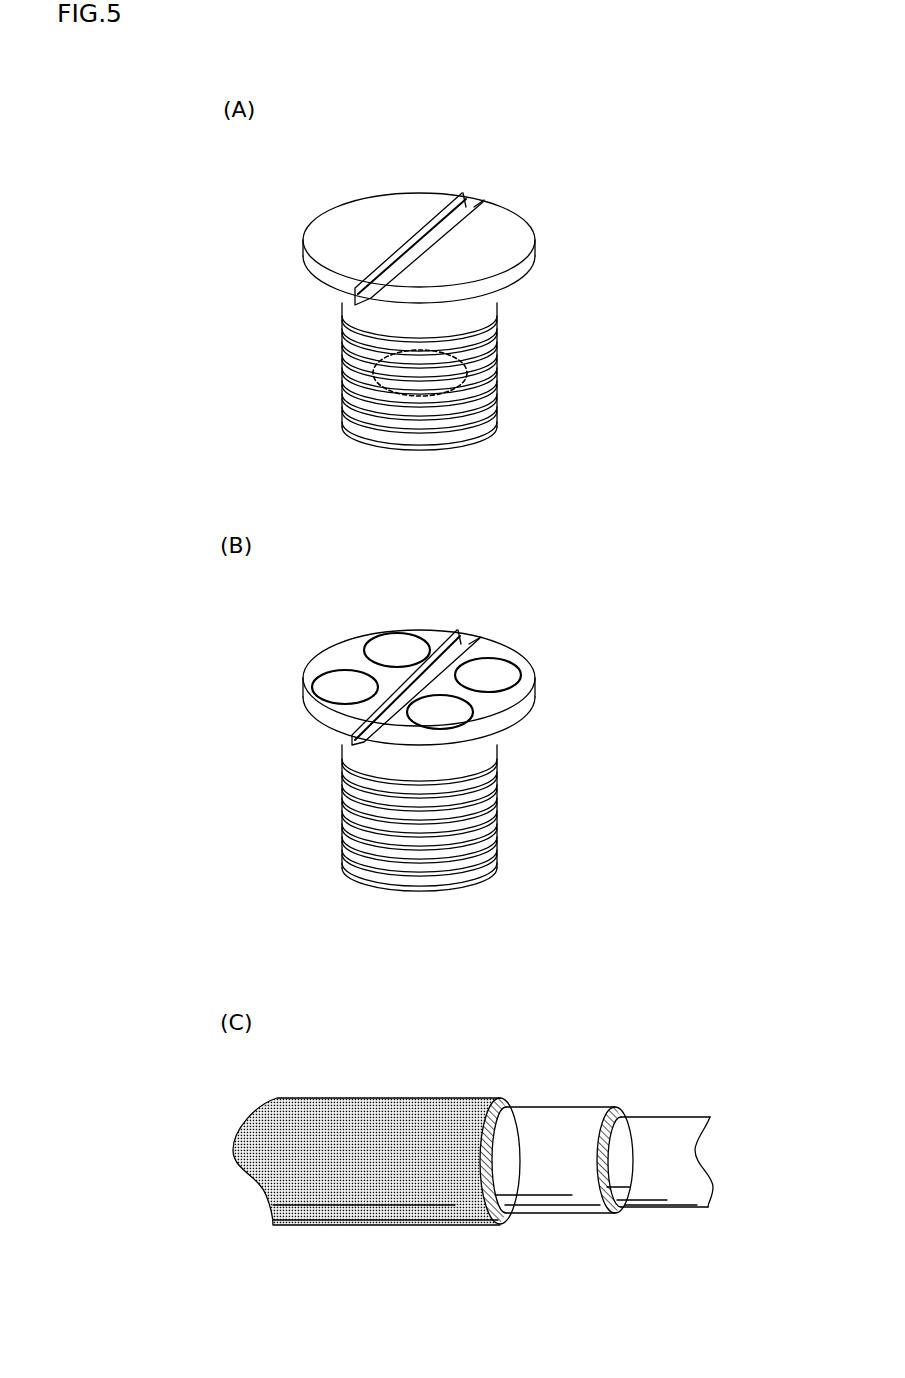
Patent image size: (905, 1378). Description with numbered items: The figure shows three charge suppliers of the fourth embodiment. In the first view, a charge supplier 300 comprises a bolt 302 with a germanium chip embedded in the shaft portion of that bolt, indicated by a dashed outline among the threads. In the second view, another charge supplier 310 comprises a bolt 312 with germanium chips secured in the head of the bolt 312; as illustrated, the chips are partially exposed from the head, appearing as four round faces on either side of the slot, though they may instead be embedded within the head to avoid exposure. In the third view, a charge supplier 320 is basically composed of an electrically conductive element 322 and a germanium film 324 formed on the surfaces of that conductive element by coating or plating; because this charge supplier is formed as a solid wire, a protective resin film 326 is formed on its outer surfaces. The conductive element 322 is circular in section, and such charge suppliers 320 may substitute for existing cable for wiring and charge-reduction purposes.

The charge supplier 300 is at (592, 152).
The bolt 302 is at (341, 213).
The charge supplier 310 is at (589, 589).
The bolt 312 is at (338, 653).
The charge supplier 320 is at (695, 1008).
The electrically conductive element 322 is at (683, 1122).
The germanium film 324 is at (567, 1115).
The protective resin film 326 is at (377, 1105).